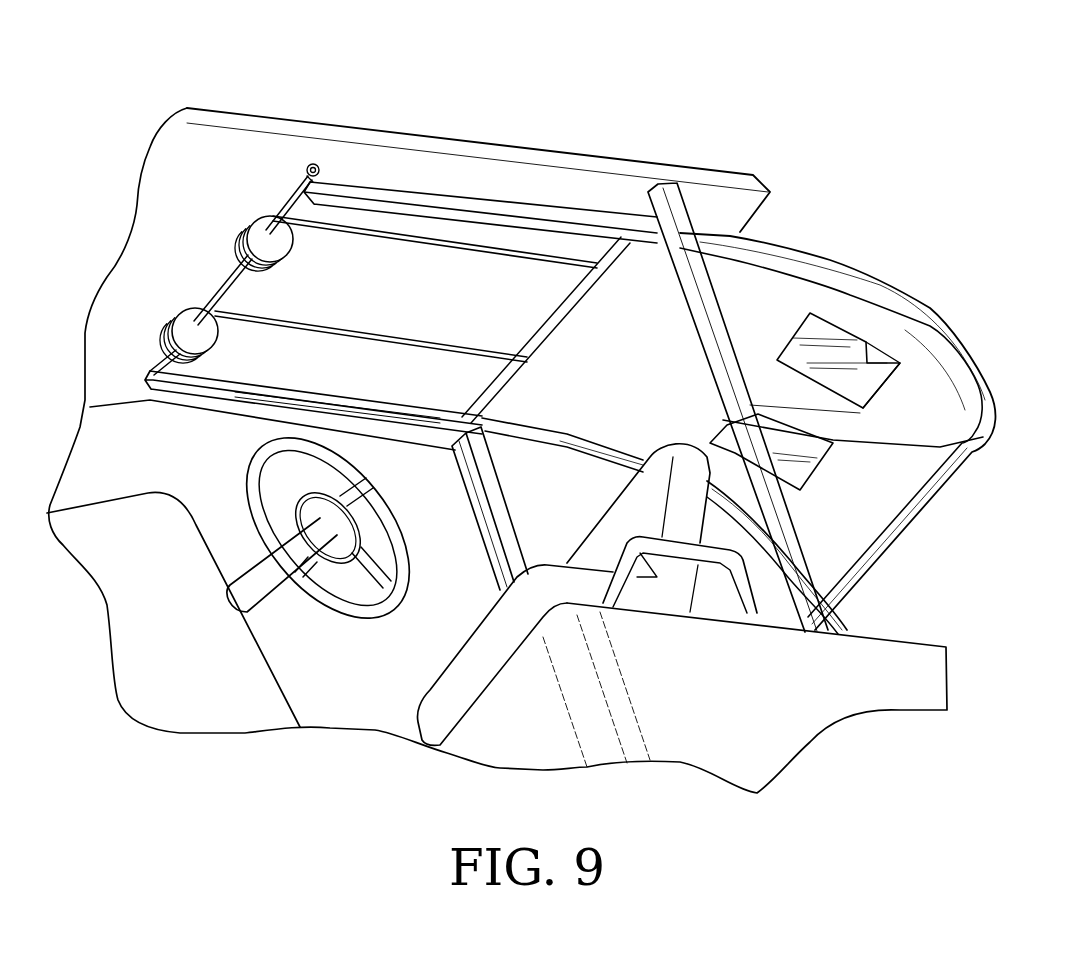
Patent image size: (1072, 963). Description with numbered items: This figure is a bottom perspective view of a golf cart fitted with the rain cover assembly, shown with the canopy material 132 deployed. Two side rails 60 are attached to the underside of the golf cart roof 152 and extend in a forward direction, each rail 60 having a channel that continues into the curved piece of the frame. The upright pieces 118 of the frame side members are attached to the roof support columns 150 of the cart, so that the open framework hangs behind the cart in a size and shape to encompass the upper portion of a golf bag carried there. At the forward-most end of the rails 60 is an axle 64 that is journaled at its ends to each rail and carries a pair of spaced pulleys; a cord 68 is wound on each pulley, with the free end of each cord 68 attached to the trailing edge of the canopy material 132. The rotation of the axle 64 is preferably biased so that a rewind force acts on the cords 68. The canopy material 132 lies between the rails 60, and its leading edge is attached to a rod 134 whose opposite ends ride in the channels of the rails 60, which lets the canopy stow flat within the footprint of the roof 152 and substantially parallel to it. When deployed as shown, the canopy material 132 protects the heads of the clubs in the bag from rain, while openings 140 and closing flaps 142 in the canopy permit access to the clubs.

The rail 60 is at (403, 193).
The axle 64 is at (220, 280).
The cord 68 is at (400, 237).
The upright piece 118 is at (737, 297).
The canopy material 132 is at (927, 390).
The rod 134 is at (853, 560).
The opening 140 is at (900, 363).
The closing flap 142 is at (843, 343).
The roof support column 150 is at (689, 307).
The golf cart roof 152 is at (340, 130).